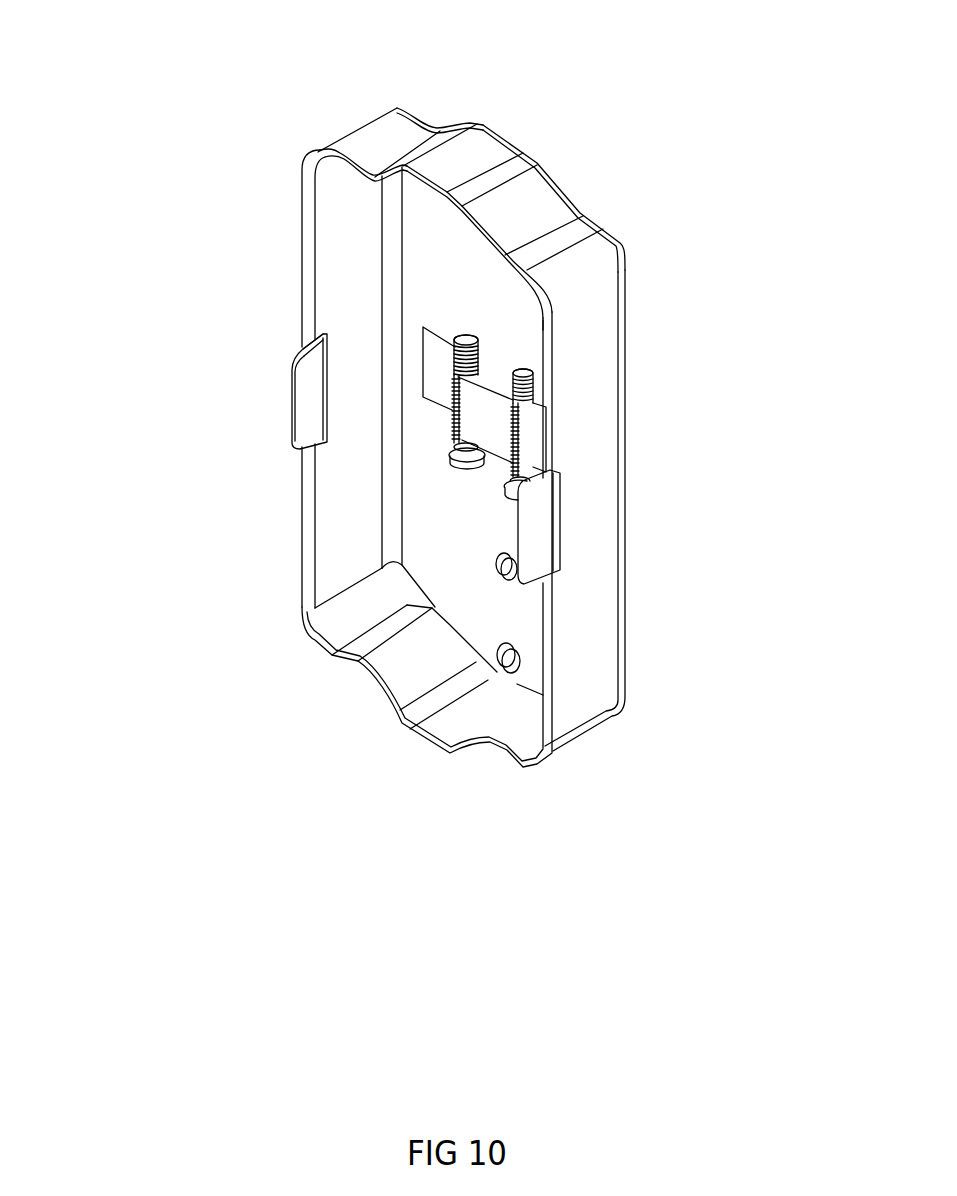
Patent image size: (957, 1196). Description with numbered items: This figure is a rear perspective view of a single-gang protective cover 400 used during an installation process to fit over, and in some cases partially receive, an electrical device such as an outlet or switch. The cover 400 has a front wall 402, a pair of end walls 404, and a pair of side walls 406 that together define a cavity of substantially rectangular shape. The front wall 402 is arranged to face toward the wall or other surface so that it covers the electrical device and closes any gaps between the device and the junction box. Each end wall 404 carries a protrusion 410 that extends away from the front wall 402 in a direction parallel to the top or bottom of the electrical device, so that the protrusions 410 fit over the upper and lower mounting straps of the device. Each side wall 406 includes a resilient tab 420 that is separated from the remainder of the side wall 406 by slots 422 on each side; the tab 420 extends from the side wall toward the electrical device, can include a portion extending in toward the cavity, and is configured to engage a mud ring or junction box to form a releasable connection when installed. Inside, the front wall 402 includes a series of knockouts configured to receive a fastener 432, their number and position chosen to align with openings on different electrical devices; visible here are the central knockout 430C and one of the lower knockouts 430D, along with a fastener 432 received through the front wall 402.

The single-gang protective cover 400 is at (196, 88).
The front wall 402 is at (493, 303).
The end wall 404 is at (383, 133).
The side wall 406 is at (328, 283).
The protrusion 410 is at (488, 125).
The resilient tab 420 is at (302, 420).
The slot 422 is at (303, 339).
The central knockout 430C is at (497, 566).
The lower knockout 430D is at (506, 665).
The fastener 432 is at (546, 404).